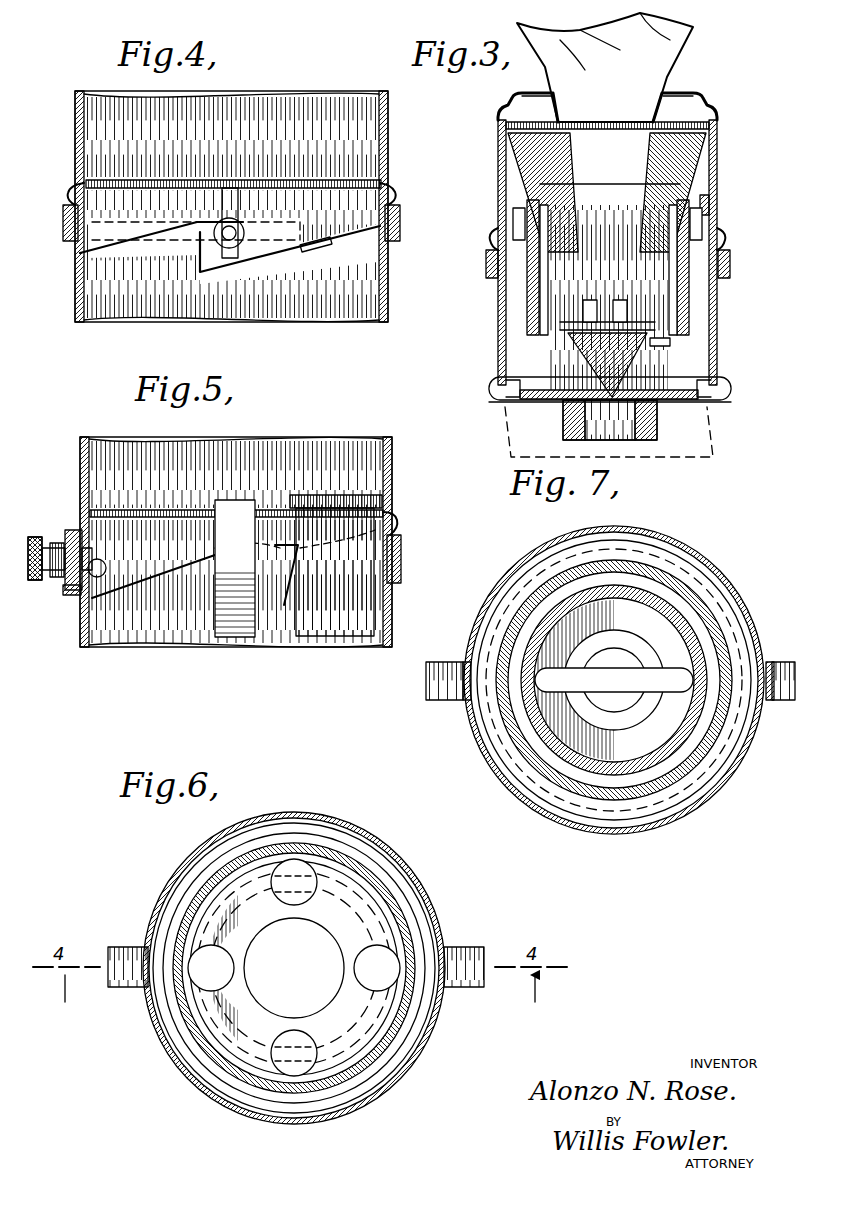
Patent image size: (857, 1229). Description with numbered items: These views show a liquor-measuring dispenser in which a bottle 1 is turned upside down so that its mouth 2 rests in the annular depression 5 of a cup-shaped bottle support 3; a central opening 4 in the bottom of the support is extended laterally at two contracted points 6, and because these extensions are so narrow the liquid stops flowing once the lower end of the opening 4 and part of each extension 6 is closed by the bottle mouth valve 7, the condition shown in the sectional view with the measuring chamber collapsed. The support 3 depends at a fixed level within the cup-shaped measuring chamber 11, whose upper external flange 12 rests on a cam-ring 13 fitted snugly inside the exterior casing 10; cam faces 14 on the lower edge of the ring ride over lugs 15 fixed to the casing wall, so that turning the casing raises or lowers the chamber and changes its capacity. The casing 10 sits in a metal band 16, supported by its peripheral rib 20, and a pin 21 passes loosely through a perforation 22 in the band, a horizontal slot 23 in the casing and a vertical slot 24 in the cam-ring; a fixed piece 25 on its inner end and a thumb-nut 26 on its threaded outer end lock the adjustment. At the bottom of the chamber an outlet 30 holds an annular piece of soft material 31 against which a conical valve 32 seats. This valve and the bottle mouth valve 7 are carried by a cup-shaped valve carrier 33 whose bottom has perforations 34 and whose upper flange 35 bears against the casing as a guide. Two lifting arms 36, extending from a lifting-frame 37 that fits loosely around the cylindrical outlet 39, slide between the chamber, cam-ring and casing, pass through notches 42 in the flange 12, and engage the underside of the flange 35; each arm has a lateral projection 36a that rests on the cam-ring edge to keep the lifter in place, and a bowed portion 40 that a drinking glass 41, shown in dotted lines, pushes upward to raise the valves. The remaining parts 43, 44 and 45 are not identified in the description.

In FIG. 3, the bottle 1 is at (675, 48).
In FIG. 3, the bottle mouth 2 is at (588, 322).
In FIG. 3, the bottle support 3 is at (705, 192).
In FIG. 7, the bottle support 3 is at (548, 620).
In FIG. 3, the central opening 4 is at (615, 322).
In FIG. 7, the central opening 4 is at (614, 680).
In FIG. 7, the annular depression 5 is at (614, 680).
In FIG. 3, the laterally extended openings 6 is at (568, 340).
In FIG. 7, the laterally extended openings 6 is at (614, 681).
In FIG. 3, the bottle mouth valve 7 is at (660, 315).
In FIG. 4, the exterior casing 10 is at (78, 140).
In FIG. 3, the exterior casing 10 is at (716, 160).
In FIG. 5, the exterior casing 10 is at (85, 440).
In FIG. 7, the exterior casing 10 is at (742, 605).
In FIG. 6, the exterior casing 10 is at (336, 820).
In FIG. 3, the measuring chamber 11 is at (515, 392).
In FIG. 5, the measuring chamber 11 is at (330, 632).
In FIG. 7, the measuring chamber 11 is at (690, 575).
In FIG. 6, the measuring chamber 11 is at (178, 880).
In FIG. 3, the external flange 12 is at (492, 240).
In FIG. 5, the external flange 12 is at (315, 500).
In FIG. 4, the cam-ring 13 is at (288, 178).
In FIG. 5, the cam-ring 13 is at (205, 508).
In FIG. 4, the cam faces 14 is at (190, 225).
In FIG. 5, the cam faces 14 is at (205, 565).
In FIG. 4, the lug 15 is at (322, 256).
In FIG. 4, the band 16 is at (64, 243).
In FIG. 3, the band 16 is at (486, 265).
In FIG. 5, the band 16 is at (400, 555).
In FIG. 4, the peripheral rib 20 is at (72, 193).
In FIG. 5, the peripheral rib 20 is at (395, 520).
In FIG. 5, the pin 21 is at (70, 585).
In FIG. 5, the perforation 22 is at (68, 548).
In FIG. 4, the horizontal slot 23 is at (185, 232).
In FIG. 4, the vertical slot 24 is at (240, 202).
In FIG. 5, the vertical slot 24 is at (92, 530).
In FIG. 4, the fixed piece 25 is at (236, 248).
In FIG. 5, the fixed piece 25 is at (100, 590).
In FIG. 5, the thumb-nut 26 is at (36, 537).
In FIG. 3, the outlet 30 is at (620, 425).
In FIG. 3, the annular piece of soft material 31 is at (650, 418).
In FIG. 3, the conical valve 32 is at (560, 402).
In FIG. 3, the valve carrier 33 is at (690, 242).
In FIG. 7, the valve carrier 33 is at (712, 755).
In FIG. 3, the perforations 34 is at (672, 345).
In FIG. 6, the perforations 34 is at (372, 948).
In FIG. 3, the carrier flange 35 is at (712, 205).
In FIG. 3, the lifting arms 36 is at (525, 222).
In FIG. 5, the lifting arms 36 is at (240, 640).
In FIG. 7, the lifting arms 36 is at (455, 700).
In FIG. 6, the lifting arms 36 is at (140, 950).
In FIG. 3, the lateral projection 36a is at (703, 215).
In FIG. 3, the lifting-frame 37 is at (730, 402).
In FIG. 3, the cylindrical outlet 39 is at (660, 432).
In FIG. 3, the bowed portion 40 is at (488, 388).
In FIG. 3, the drinking glass 41 is at (505, 448).
In FIG. 7, the notches 42 is at (462, 650).
In FIG. 3, the rim 43 is at (705, 110).
In FIG. 3, the cover 44 is at (665, 88).
In FIG. 3, the seal 45 is at (680, 105).